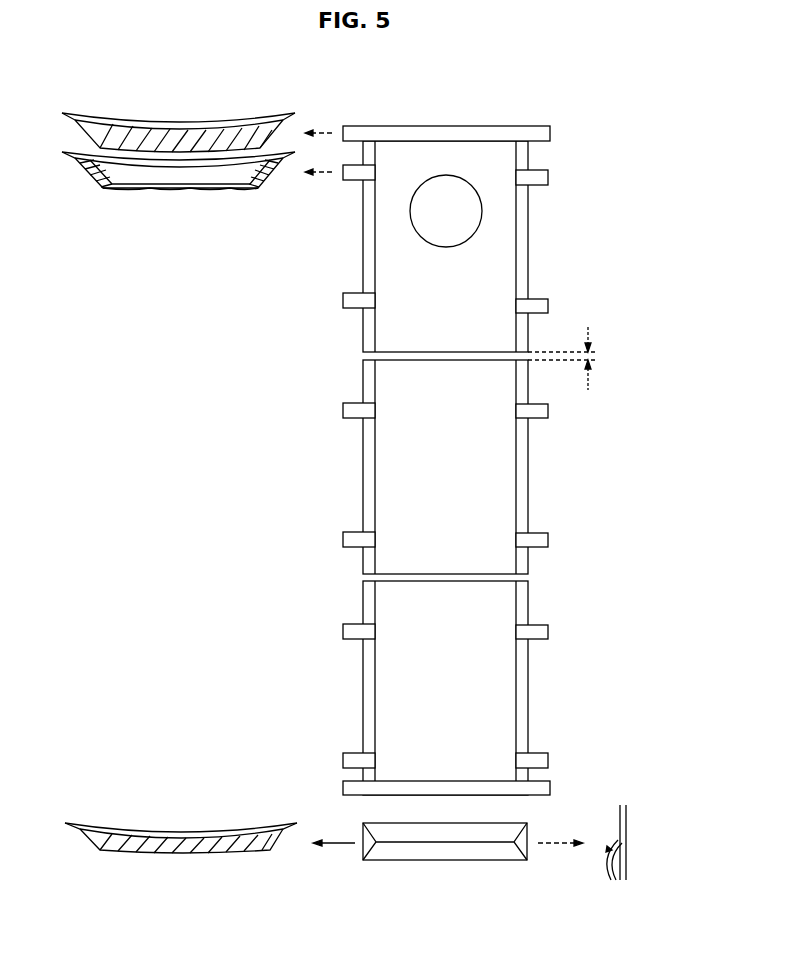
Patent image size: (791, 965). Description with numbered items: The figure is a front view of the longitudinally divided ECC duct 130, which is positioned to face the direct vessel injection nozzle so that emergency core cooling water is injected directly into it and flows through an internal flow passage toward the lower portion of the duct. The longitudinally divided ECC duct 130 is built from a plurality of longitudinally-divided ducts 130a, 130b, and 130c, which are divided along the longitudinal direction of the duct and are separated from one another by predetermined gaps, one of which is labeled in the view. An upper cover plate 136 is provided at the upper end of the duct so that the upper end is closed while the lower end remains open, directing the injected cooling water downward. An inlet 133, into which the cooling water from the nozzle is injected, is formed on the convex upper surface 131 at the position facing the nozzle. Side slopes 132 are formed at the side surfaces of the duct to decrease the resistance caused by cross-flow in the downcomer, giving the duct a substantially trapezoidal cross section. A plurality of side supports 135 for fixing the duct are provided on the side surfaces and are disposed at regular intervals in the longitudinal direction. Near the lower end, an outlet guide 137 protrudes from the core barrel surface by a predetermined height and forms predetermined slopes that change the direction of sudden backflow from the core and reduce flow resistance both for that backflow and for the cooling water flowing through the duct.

The longitudinally divided ECC duct 130 is at (468, 89).
The longitudinally-divided duct 130a is at (362, 262).
The longitudinally-divided duct 130b is at (362, 472).
The longitudinally-divided duct 130c is at (362, 680).
The upper surface 131 is at (498, 334).
The side slopes 132 is at (527, 262).
The inlet 133 is at (447, 213).
The side supports 135 is at (548, 177).
The upper cover plate 136 is at (548, 130).
The outlet guide 137 is at (616, 856).